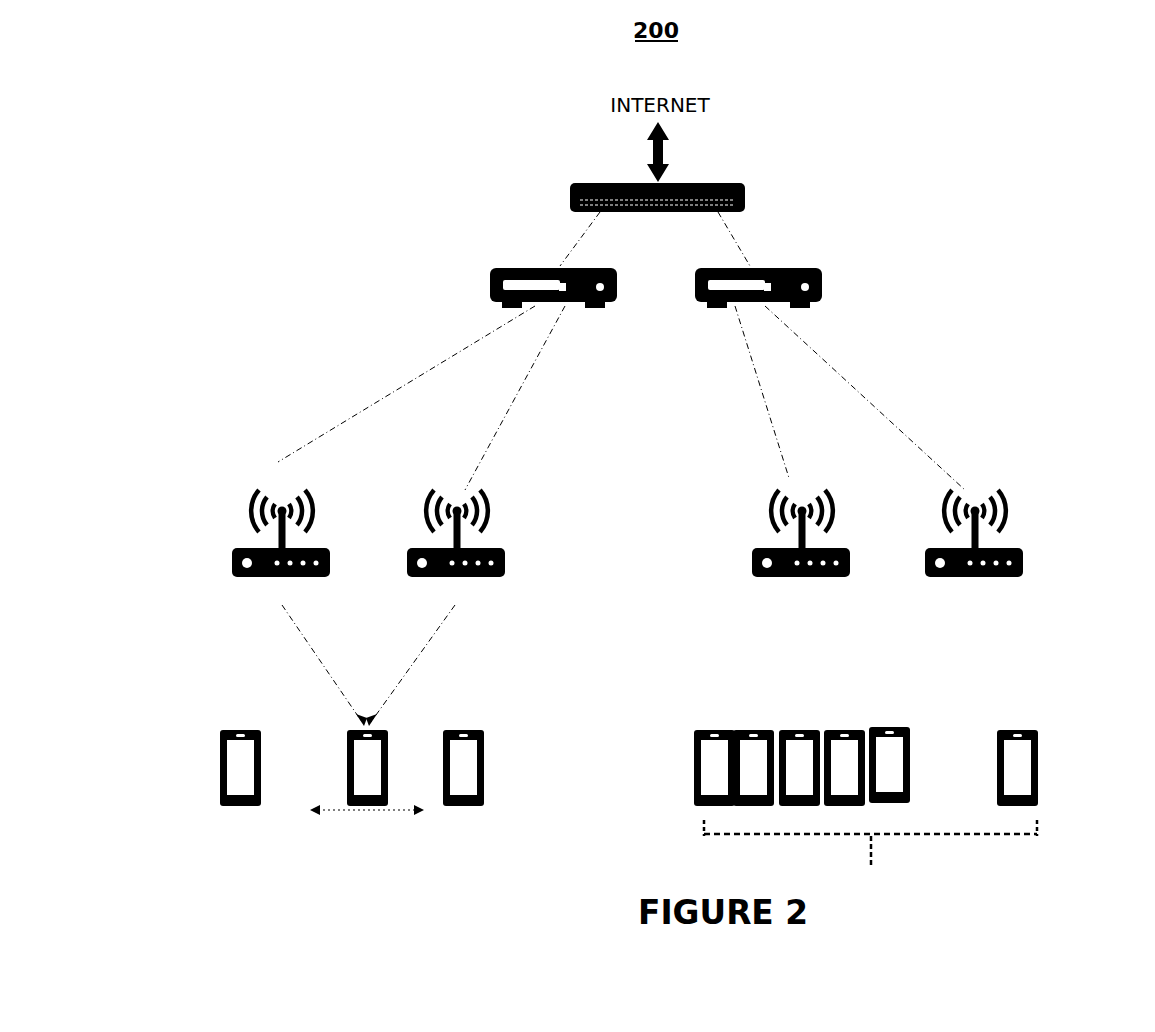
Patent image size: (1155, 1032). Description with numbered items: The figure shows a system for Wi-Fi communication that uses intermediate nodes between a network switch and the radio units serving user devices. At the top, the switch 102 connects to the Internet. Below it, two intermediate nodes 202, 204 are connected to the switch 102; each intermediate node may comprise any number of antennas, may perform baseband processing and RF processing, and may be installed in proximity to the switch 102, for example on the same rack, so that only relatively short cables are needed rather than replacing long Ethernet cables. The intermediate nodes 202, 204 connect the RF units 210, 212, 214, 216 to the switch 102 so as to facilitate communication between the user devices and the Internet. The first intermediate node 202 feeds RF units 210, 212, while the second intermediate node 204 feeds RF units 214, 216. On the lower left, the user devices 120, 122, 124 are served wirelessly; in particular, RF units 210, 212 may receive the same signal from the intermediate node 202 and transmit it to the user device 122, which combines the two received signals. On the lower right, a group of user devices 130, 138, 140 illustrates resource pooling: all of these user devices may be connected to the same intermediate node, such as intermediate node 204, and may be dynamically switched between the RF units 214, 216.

The switch 102 is at (608, 178).
The intermediate node 202 is at (520, 265).
The intermediate node 204 is at (793, 265).
The RF unit 210 is at (232, 547).
The RF unit 212 is at (407, 547).
The RF unit 214 is at (760, 547).
The RF unit 216 is at (933, 547).
The user device 120 is at (218, 768).
The user device 122 is at (345, 769).
The user device 124 is at (487, 771).
The user device 130 is at (839, 777).
The user device 138 is at (890, 722).
The user device 140 is at (1023, 722).